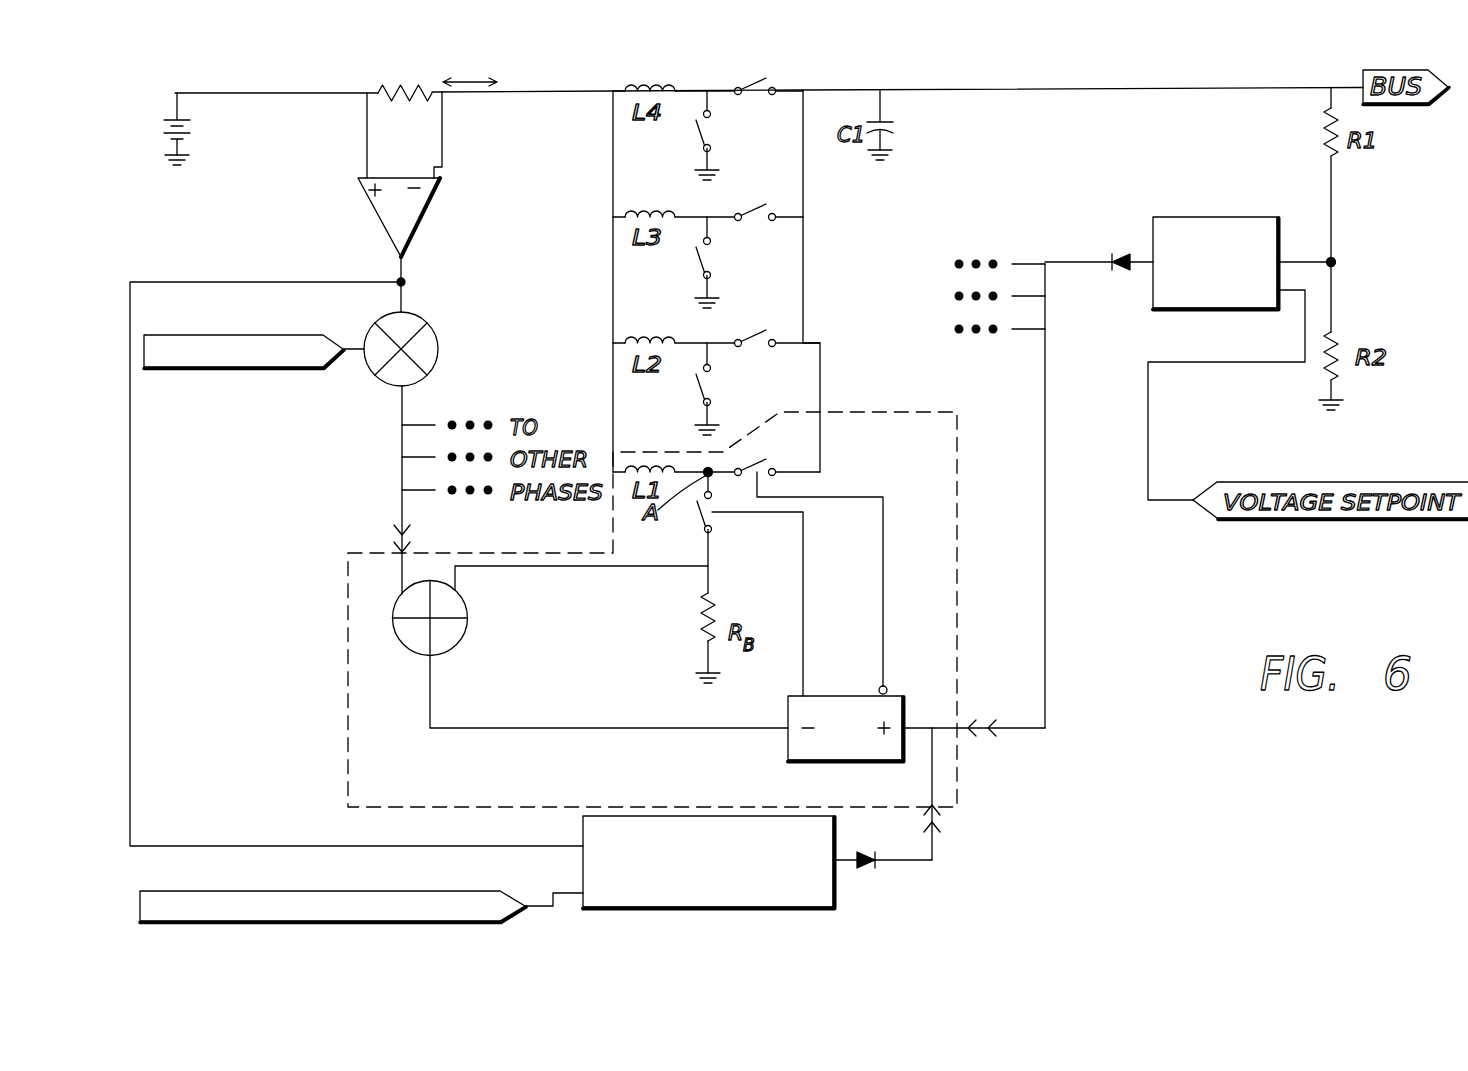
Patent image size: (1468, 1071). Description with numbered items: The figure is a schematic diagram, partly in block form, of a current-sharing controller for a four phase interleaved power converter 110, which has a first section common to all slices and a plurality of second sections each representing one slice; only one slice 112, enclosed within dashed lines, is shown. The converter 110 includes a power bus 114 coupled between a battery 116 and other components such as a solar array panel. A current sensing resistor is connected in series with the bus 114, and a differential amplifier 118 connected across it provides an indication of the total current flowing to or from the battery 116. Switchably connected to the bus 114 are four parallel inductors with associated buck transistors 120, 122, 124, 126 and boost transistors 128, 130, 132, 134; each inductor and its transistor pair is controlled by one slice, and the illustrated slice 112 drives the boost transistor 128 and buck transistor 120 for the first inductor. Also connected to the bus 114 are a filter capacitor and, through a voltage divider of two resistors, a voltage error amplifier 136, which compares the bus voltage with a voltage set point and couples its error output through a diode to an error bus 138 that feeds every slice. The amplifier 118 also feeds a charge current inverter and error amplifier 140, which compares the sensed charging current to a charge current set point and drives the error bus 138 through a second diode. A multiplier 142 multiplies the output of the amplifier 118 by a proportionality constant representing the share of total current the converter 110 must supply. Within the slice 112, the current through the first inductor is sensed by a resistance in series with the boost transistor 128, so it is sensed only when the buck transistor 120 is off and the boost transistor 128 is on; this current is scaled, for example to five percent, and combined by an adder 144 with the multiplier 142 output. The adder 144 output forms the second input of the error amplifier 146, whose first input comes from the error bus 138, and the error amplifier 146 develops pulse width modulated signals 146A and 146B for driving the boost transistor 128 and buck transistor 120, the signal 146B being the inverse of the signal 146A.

The interleaved power converter 110 is at (1083, 690).
The slice 112 is at (348, 582).
The power bus 114 is at (1020, 90).
The battery 116 is at (198, 130).
The amplifier 118 is at (437, 189).
The buck transistor 120 is at (752, 456).
The buck transistor 122 is at (748, 332).
The buck transistor 124 is at (750, 206).
The buck transistor 126 is at (763, 95).
The boost transistor 128 is at (693, 513).
The boost transistor 130 is at (712, 380).
The boost transistor 132 is at (710, 253).
The boost transistor 134 is at (710, 133).
The voltage error amplifier 136 is at (1233, 216).
The error bus 138 is at (1047, 532).
The charge current inverter and error amplifier 140 is at (836, 895).
The multiplier 142 is at (432, 330).
The adder 144 is at (462, 637).
The error amplifier 146 is at (788, 745).
The pulse width modulated signal 146A is at (800, 560).
The pulse width modulated signal 146B is at (852, 548).